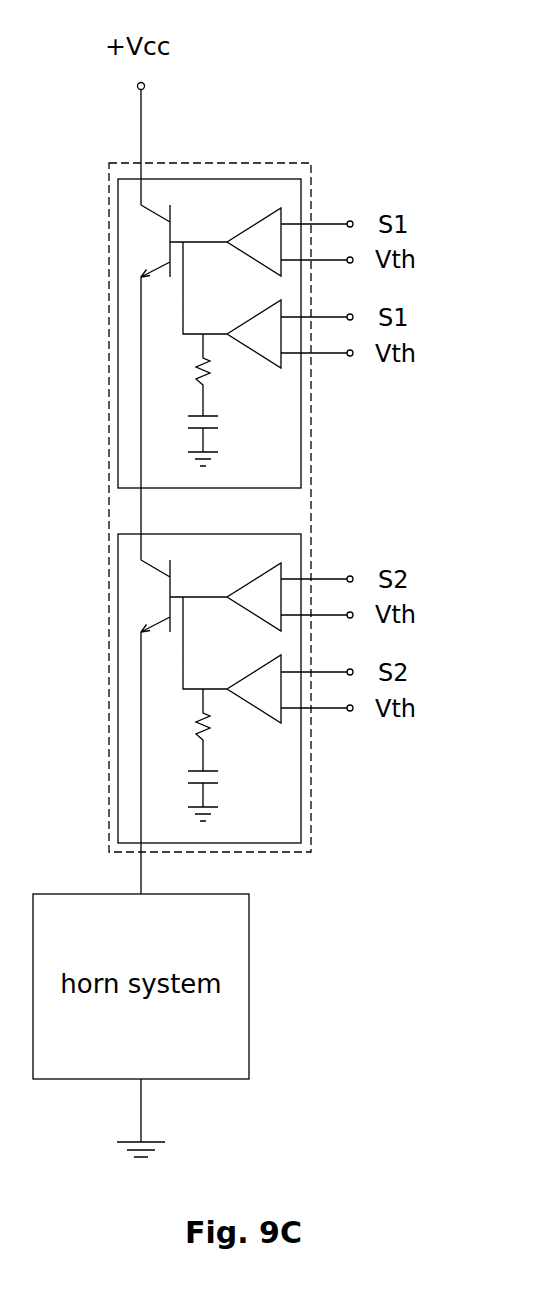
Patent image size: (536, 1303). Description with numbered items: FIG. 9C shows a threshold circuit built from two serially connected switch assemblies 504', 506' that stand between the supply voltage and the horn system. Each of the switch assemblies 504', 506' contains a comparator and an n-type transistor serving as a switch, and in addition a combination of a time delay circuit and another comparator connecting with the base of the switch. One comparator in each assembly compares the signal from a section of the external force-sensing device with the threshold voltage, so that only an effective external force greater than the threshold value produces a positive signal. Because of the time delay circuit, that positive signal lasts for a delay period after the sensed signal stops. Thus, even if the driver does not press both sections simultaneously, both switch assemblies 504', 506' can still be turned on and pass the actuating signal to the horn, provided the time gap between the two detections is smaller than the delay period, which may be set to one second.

The switch assembly 504' is at (272, 289).
The switch assembly 506' is at (265, 659).